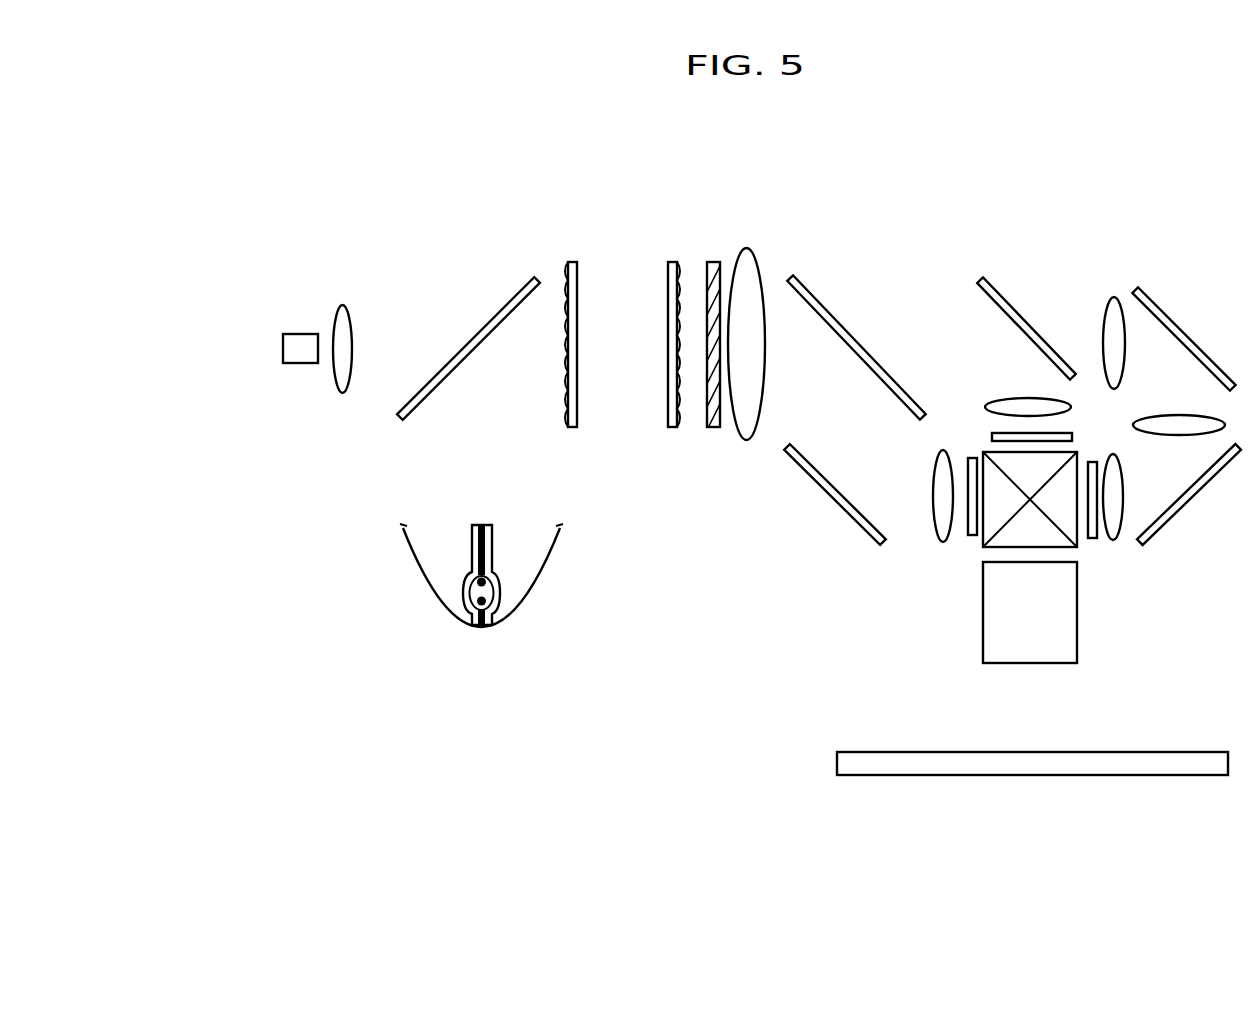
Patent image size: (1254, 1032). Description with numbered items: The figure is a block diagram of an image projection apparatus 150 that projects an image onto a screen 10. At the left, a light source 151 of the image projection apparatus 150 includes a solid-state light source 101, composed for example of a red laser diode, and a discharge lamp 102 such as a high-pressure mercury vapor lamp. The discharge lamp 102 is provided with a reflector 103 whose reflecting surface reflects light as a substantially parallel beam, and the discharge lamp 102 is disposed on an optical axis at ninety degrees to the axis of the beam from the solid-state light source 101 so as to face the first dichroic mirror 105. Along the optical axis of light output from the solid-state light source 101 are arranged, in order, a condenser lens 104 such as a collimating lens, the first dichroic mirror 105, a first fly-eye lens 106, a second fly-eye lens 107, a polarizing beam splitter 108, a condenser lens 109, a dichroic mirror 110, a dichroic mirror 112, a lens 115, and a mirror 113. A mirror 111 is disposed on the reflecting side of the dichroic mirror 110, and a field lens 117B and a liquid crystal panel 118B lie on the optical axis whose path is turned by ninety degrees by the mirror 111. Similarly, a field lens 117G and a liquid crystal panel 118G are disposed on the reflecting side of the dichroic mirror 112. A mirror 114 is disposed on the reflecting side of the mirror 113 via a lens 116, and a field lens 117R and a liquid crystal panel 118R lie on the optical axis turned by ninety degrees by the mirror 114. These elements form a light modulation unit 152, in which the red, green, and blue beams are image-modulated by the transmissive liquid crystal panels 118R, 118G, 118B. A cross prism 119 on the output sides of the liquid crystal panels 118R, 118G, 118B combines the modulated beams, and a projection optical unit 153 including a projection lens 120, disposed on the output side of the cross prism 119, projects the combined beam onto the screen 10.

The screen 10 is at (1083, 777).
The solid-state light source 101 is at (302, 333).
The discharge lamp 102 is at (477, 525).
The reflector 103 is at (560, 533).
The condenser lens 104 is at (343, 305).
The first dichroic mirror 105 is at (490, 322).
The first fly-eye lens 106 is at (575, 260).
The second fly-eye lens 107 is at (673, 261).
The polarizing beam splitter 108 is at (713, 261).
The condenser lens 109 is at (752, 249).
The dichroic mirror 110 is at (866, 350).
The mirror 111 is at (838, 502).
The dichroic mirror 112 is at (1016, 312).
The mirror 113 is at (1186, 335).
The mirror 114 is at (1178, 510).
The lens 115 is at (1115, 297).
The lens 116 is at (1177, 415).
The field lens 117G is at (1000, 398).
The field lens 117B is at (933, 473).
The field lens 117R is at (1112, 543).
The liquid crystal panel 118G is at (993, 433).
The liquid crystal panel 118B is at (972, 540).
The liquid crystal panel 118R is at (1092, 543).
The cross prism 119 is at (983, 455).
The projection lens 120 is at (982, 635).
The image projection apparatus 150 is at (920, 909).
The light source 151 is at (181, 530).
The light modulation unit 152 is at (913, 557).
The projection optical unit 153 is at (1115, 637).